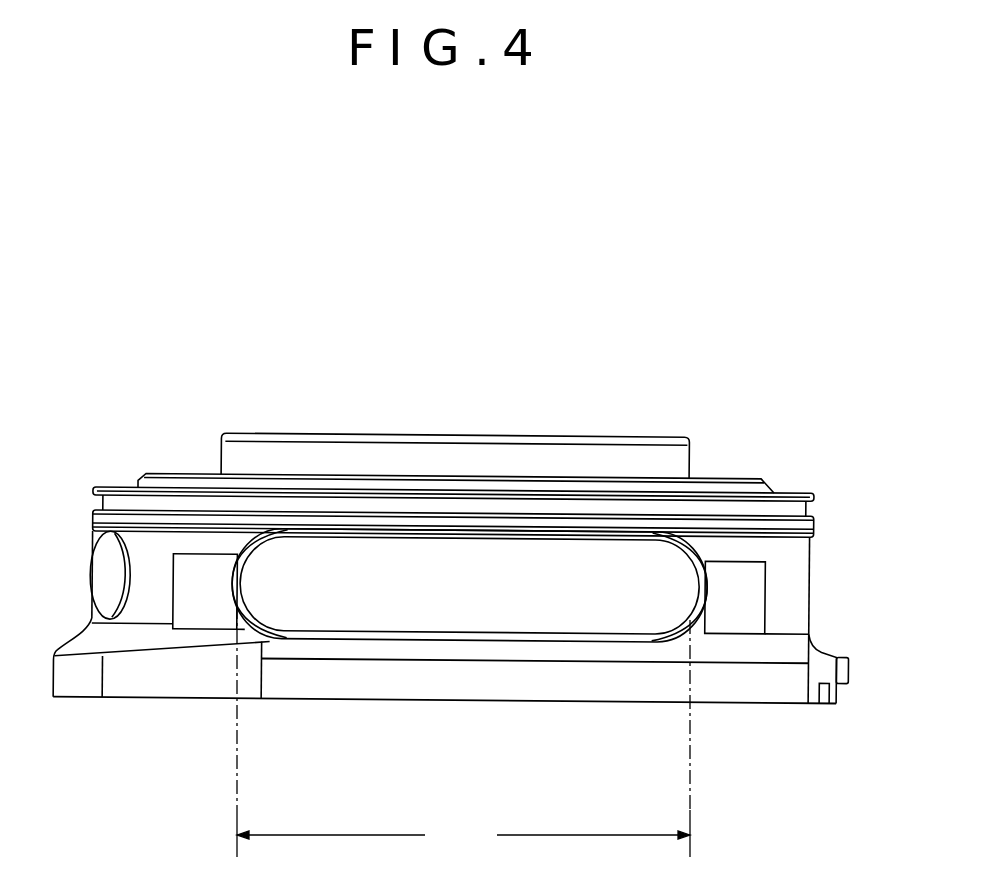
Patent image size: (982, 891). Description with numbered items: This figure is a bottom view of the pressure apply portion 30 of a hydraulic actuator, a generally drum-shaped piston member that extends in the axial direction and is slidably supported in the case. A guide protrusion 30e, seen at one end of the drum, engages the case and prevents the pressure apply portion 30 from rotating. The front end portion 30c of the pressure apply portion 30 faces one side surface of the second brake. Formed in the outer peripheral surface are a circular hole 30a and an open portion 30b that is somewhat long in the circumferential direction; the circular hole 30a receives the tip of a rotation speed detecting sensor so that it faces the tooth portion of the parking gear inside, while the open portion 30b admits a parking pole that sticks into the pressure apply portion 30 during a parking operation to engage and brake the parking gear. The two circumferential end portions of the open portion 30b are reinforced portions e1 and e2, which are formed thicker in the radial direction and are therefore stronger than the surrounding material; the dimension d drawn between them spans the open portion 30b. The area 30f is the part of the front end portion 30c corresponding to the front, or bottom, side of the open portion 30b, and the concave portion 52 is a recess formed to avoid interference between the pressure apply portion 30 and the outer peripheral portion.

The pressure apply portion 30 is at (645, 424).
The circular hole 30a is at (120, 588).
The open portion 30b is at (620, 570).
The front end portion 30c is at (695, 705).
The guide protrusion 30e is at (832, 665).
The area on front side of open portion 30f is at (465, 683).
The concave portion 52 is at (198, 680).
The reinforced portion e1 is at (240, 576).
The reinforced portion e2 is at (692, 588).
The distance between edges d is at (463, 731).